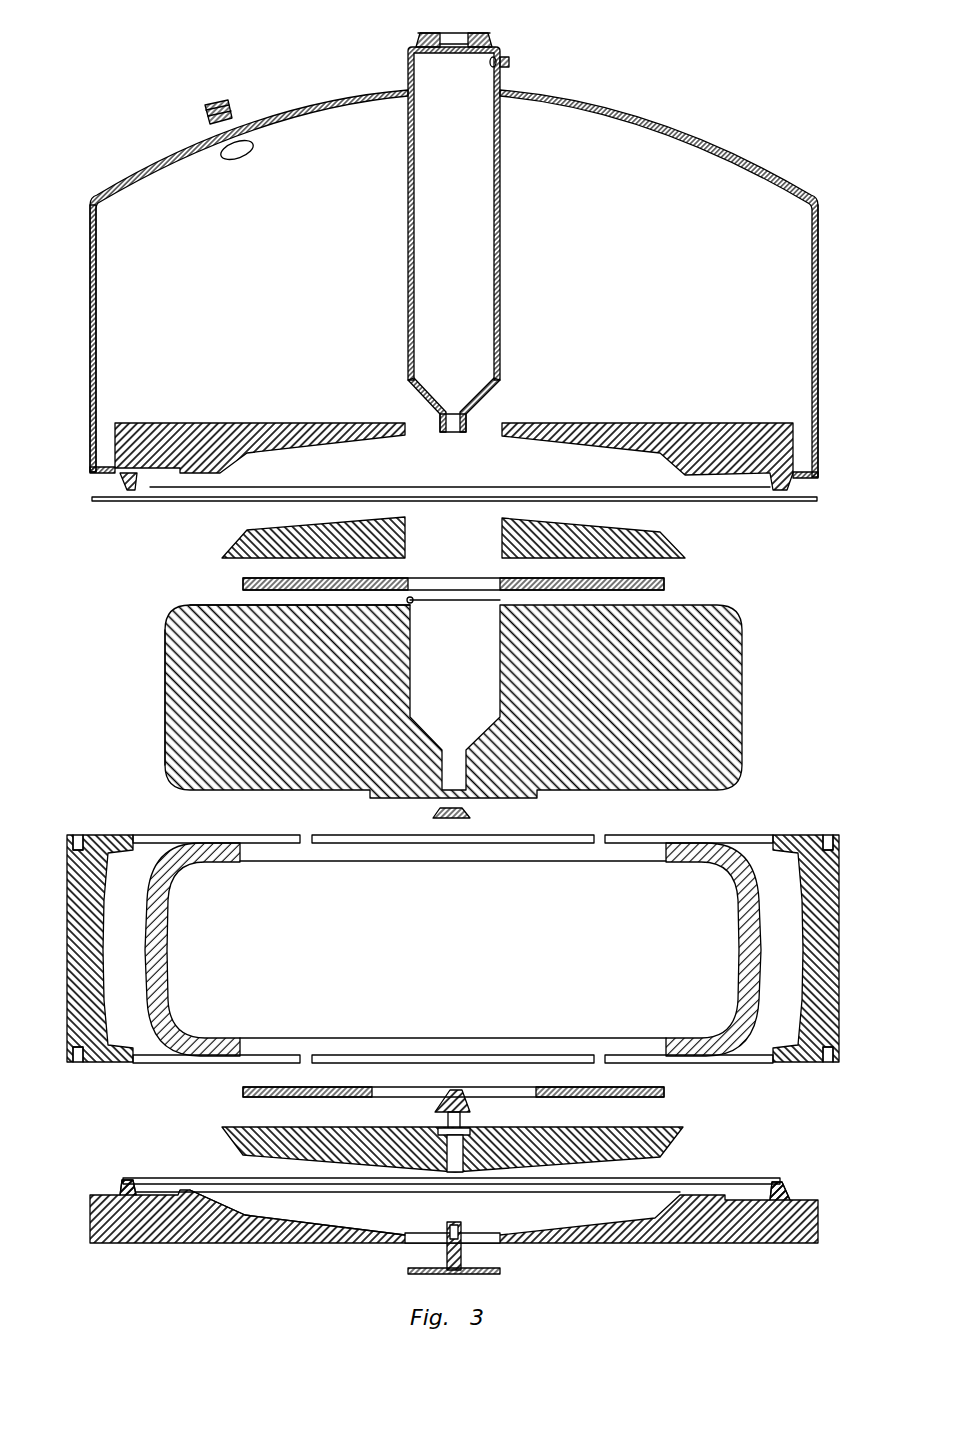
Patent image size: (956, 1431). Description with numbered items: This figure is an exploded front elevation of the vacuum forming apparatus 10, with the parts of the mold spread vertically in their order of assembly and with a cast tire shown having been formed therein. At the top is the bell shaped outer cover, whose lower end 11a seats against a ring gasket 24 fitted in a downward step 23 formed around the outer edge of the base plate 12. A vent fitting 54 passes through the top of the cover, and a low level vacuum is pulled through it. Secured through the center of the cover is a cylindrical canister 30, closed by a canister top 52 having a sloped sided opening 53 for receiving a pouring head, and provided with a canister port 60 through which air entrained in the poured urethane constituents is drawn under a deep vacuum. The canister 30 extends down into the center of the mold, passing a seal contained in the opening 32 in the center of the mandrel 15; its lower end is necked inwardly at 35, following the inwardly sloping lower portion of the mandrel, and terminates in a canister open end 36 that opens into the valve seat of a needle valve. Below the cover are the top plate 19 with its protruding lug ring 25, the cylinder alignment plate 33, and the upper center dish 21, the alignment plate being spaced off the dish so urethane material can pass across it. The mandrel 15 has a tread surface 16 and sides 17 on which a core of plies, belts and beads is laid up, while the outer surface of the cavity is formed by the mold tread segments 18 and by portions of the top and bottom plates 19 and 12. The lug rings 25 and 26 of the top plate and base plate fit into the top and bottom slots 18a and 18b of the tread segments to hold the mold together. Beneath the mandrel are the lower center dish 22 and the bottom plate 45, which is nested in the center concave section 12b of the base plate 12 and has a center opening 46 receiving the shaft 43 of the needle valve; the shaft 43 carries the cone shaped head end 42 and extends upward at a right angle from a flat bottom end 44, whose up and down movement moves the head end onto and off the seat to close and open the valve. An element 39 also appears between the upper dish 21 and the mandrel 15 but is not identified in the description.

The vacuum forming apparatus 10 is at (752, 112).
The lower end of the bell shaped cover 11a is at (90, 468).
The base plate 12 is at (140, 1232).
The center concave section 12b is at (280, 1222).
The mandrel 15 is at (202, 668).
The tread surface 16 is at (163, 706).
The sides 17 is at (200, 604).
The mold tread segments 18 is at (98, 836).
The top slot 18a is at (76, 836).
The bottom slot 18b is at (76, 1063).
The top plate 19 is at (240, 422).
The upper center dish 21 is at (243, 582).
The lower center dish 22 is at (243, 1091).
The step 23 is at (122, 1182).
The ring gasket 24 is at (96, 502).
The lug ring 25 is at (126, 492).
The lug ring 26 is at (122, 1181).
The cylindrical canister 30 is at (528, 68).
The opening 32 is at (408, 322).
The cylinder alignment plate 33 is at (272, 530).
The necked portion 35 is at (488, 402).
The canister open end 36 is at (438, 418).
The seal 39 is at (462, 603).
The head end 42 is at (447, 1090).
The shaft 43 is at (445, 1260).
The flat bottom end 44 is at (440, 1272).
The bottom plate 45 is at (243, 1149).
The center opening 46 is at (433, 813).
The canister top 52 is at (430, 30).
The opening 53 is at (445, 34).
The vent fitting 54 is at (205, 125).
The canister port 60 is at (504, 58).